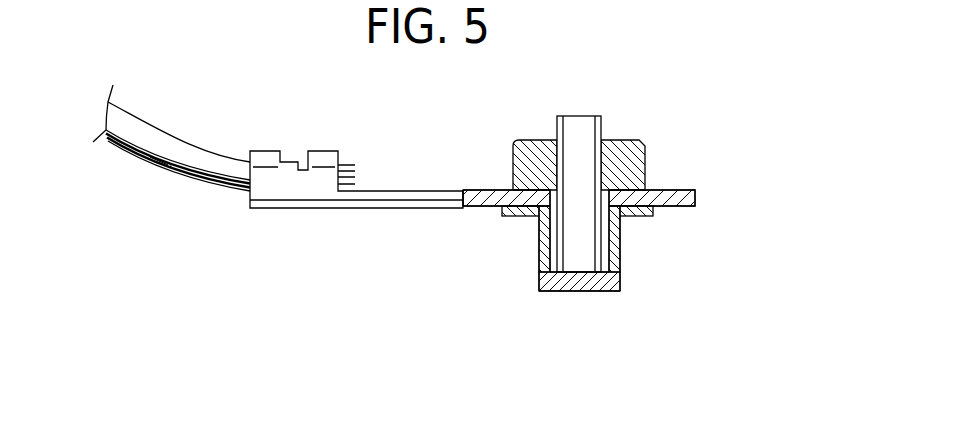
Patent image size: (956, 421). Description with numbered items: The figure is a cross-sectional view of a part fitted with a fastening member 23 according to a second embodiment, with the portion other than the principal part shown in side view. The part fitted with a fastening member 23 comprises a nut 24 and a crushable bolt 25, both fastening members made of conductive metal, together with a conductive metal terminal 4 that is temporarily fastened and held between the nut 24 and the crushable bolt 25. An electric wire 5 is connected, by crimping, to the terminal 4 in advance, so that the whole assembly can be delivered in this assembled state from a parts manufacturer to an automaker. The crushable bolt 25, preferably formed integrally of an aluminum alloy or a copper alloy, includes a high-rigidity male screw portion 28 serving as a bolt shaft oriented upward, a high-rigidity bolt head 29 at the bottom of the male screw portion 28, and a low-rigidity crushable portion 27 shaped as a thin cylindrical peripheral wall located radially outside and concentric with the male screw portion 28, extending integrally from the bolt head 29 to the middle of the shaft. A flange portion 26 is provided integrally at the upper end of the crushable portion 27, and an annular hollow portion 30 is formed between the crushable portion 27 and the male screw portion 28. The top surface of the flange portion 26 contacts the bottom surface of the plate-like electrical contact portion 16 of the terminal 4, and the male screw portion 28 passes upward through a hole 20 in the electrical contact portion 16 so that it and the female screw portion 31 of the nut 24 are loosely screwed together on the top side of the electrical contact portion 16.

The terminal 4 is at (417, 188).
The electric wire 5 is at (168, 142).
The electrical contact portion 16 is at (672, 190).
The hole 20 is at (561, 190).
The part fitted with a fastening member 23 is at (592, 192).
The nut 24 is at (644, 136).
The crushable bolt 25 is at (565, 275).
The flange portion 26 is at (503, 216).
The crushable portion 27 is at (545, 247).
The male screw portion 28 is at (603, 134).
The bolt head 29 is at (593, 287).
The annular hollow portion 30 is at (607, 237).
The female screw portion 31 is at (599, 166).